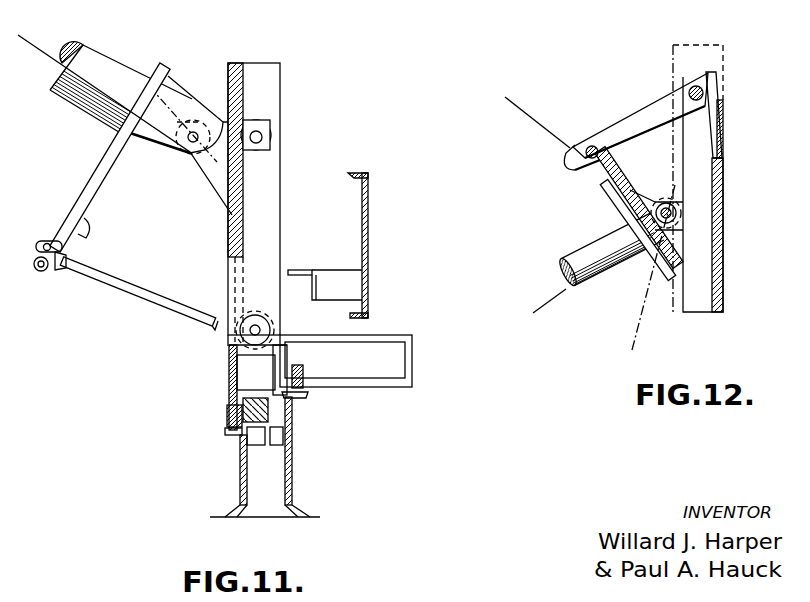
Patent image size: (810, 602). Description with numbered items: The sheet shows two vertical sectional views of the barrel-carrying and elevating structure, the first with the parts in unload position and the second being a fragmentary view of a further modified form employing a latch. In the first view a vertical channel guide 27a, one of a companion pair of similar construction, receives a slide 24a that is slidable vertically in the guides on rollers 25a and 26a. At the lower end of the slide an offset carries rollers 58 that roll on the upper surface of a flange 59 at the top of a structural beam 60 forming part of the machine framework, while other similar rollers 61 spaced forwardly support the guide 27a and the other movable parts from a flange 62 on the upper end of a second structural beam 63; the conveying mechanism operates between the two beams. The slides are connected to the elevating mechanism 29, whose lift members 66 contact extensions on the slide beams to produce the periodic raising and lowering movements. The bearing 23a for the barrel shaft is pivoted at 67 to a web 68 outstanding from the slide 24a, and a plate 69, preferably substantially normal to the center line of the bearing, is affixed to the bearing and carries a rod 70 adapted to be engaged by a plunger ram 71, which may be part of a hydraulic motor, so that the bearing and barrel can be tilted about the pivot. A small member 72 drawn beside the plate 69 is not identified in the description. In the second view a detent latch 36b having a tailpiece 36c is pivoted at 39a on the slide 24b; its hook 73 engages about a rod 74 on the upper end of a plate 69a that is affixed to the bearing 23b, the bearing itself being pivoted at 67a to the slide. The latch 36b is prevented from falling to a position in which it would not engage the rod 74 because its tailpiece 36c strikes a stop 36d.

In FIG. 11, the bearing 23a is at (92, 56).
In FIG. 12, the bearing 23b is at (603, 297).
In FIG. 11, the slide 24a is at (232, 236).
In FIG. 12, the slide 24b is at (718, 190).
In FIG. 11, the roller 25a is at (258, 122).
In FIG. 11, the roller 26a is at (262, 315).
In FIG. 11, the vertical channel guide 27a is at (262, 72).
In FIG. 11, the elevating mechanism 29 is at (368, 250).
In FIG. 12, the latch 36b is at (650, 108).
In FIG. 12, the tailpiece 36c is at (723, 136).
In FIG. 12, the stop 36d is at (719, 110).
In FIG. 12, the pivot 39a is at (696, 86).
In FIG. 11, the roller 58 is at (303, 374).
In FIG. 11, the flange 59 is at (300, 398).
In FIG. 11, the structural beam 60 is at (293, 474).
In FIG. 11, the roller 61 is at (227, 416).
In FIG. 11, the flange 62 is at (226, 434).
In FIG. 11, the structural beam 63 is at (240, 482).
In FIG. 11, the lift member 66 is at (292, 270).
In FIG. 11, the pivot 67 is at (192, 145).
In FIG. 12, the pivot 67a is at (664, 204).
In FIG. 11, the web 68 is at (180, 96).
In FIG. 11, the plate 69 is at (110, 175).
In FIG. 12, the plate 69a is at (628, 200).
In FIG. 11, the rod 70 is at (44, 270).
In FIG. 11, the plunger ram 71 is at (118, 295).
In FIG. 11, the arm 72 is at (86, 233).
In FIG. 12, the hook 73 is at (576, 172).
In FIG. 12, the rod 74 is at (594, 146).